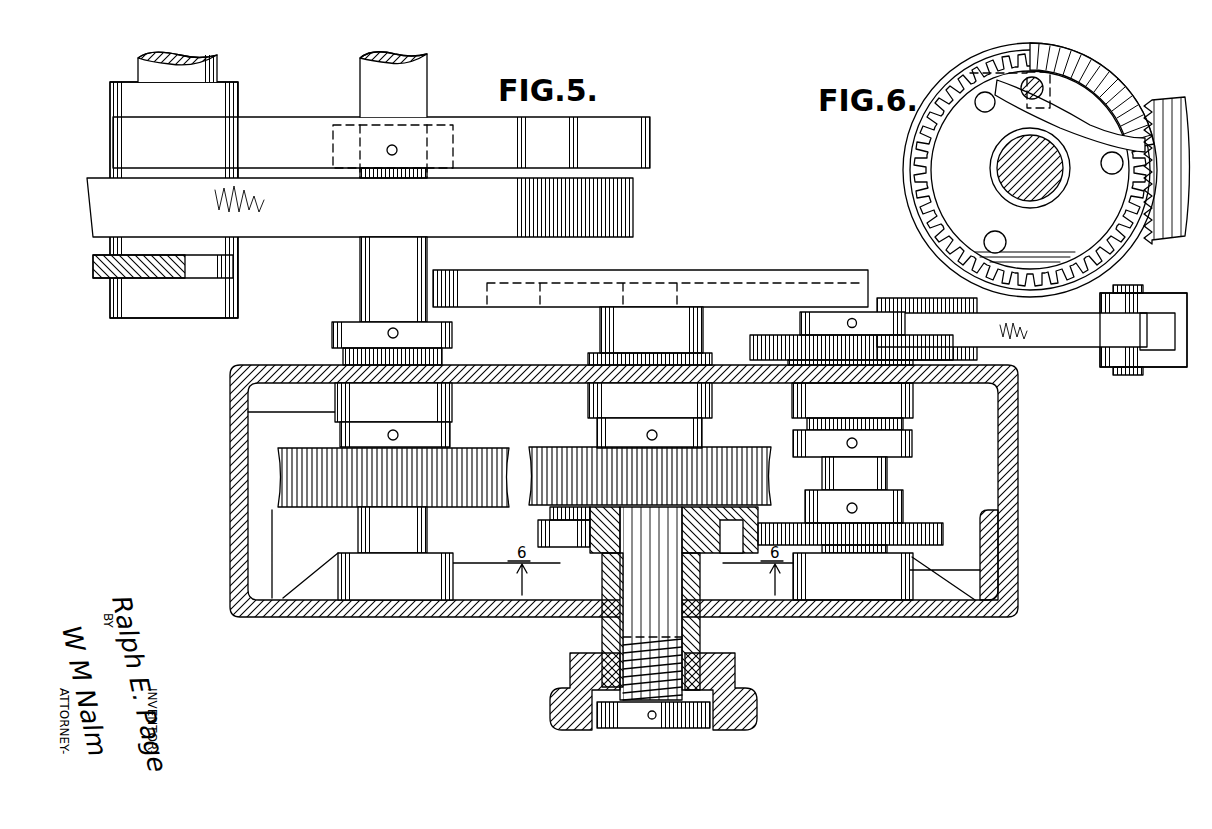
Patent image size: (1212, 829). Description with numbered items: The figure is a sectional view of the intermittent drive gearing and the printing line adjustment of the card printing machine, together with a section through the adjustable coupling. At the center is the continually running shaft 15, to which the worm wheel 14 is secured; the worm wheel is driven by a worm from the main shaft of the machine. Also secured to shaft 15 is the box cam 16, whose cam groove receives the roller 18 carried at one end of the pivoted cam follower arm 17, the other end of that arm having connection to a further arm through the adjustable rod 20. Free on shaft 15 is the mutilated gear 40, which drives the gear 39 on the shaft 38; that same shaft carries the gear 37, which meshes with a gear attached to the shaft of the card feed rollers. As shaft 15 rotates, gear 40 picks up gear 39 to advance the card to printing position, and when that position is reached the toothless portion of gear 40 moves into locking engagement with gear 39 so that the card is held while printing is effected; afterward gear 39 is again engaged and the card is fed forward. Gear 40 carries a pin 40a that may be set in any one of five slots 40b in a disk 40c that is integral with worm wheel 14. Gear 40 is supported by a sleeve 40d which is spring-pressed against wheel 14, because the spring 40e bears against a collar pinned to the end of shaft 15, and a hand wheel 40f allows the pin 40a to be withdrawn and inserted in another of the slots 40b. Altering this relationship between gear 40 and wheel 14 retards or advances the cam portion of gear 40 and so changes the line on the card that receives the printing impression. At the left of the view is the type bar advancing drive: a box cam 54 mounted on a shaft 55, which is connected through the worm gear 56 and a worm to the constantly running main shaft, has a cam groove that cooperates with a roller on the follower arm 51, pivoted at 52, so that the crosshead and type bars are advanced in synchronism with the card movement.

In FIG. 5, the worm wheel 14 is at (540, 458).
In FIG. 6, the worm wheel 14 is at (1108, 83).
In FIG. 5, the shaft 15 is at (657, 585).
In FIG. 6, the shaft 15 is at (1040, 182).
In FIG. 5, the box cam 16 is at (742, 270).
In FIG. 5, the cam follower arm 17 is at (1032, 326).
In FIG. 5, the roller 18 is at (655, 292).
In FIG. 5, the adjustable rod 20 is at (1165, 300).
In FIG. 5, the gear 37 is at (873, 345).
In FIG. 5, the shaft 38 is at (868, 477).
In FIG. 5, the gear 39 is at (927, 525).
In FIG. 6, the gear 39 is at (1170, 230).
In FIG. 5, the mutilated gear 40 is at (538, 531).
In FIG. 6, the mutilated gear 40 is at (1090, 260).
In FIG. 5, the pin 40a is at (737, 533).
In FIG. 6, the pin 40a is at (1025, 85).
In FIG. 5, the slots 40b is at (768, 503).
In FIG. 6, the slots 40b is at (1058, 100).
In FIG. 5, the disk 40c is at (718, 493).
In FIG. 6, the disk 40c is at (1113, 127).
In FIG. 5, the sleeve 40d is at (608, 623).
In FIG. 6, the sleeve 40d is at (997, 177).
In FIG. 5, the spring 40e is at (645, 680).
In FIG. 5, the hand wheel 40f is at (743, 708).
In FIG. 5, the follower arm 51 is at (200, 266).
In FIG. 5, the pivot 52 is at (200, 70).
In FIG. 5, the box cam 54 is at (593, 207).
In FIG. 5, the shaft 55 is at (385, 283).
In FIG. 5, the worm gear 56 is at (310, 448).